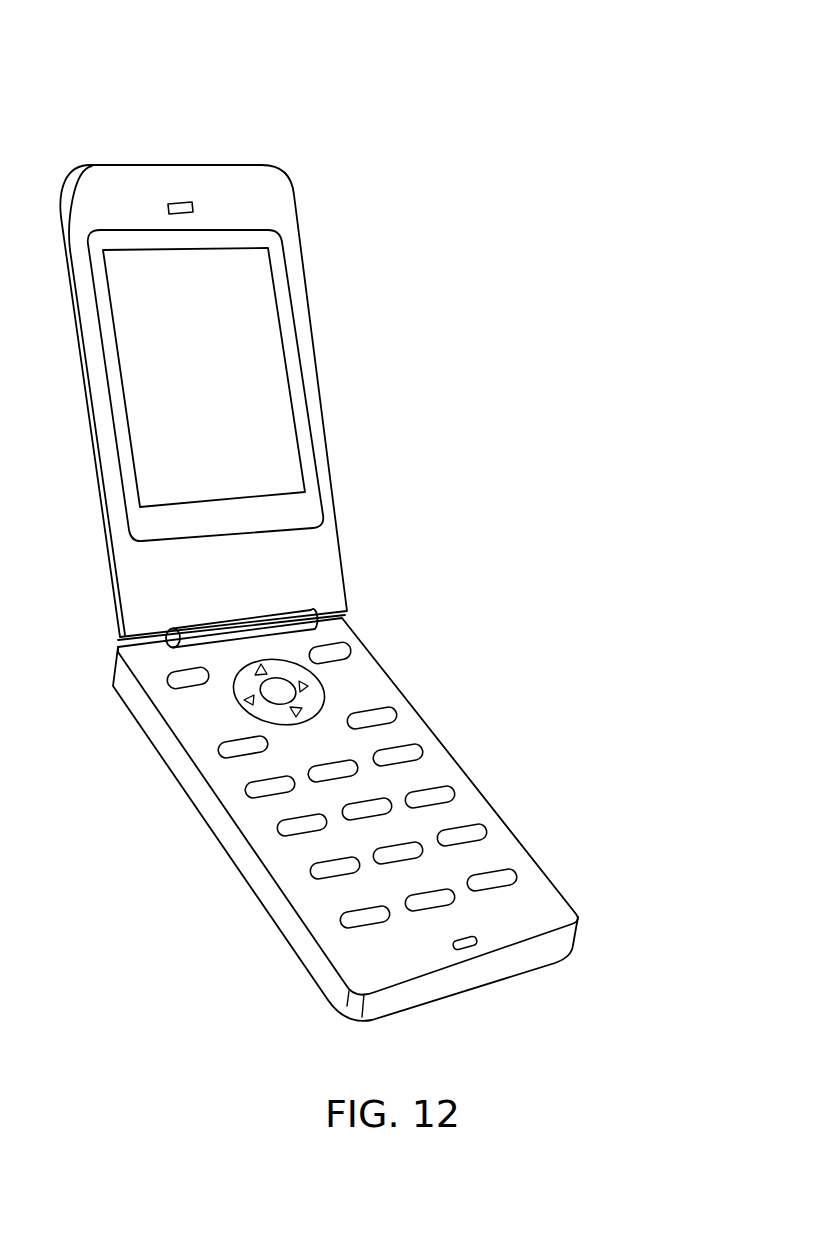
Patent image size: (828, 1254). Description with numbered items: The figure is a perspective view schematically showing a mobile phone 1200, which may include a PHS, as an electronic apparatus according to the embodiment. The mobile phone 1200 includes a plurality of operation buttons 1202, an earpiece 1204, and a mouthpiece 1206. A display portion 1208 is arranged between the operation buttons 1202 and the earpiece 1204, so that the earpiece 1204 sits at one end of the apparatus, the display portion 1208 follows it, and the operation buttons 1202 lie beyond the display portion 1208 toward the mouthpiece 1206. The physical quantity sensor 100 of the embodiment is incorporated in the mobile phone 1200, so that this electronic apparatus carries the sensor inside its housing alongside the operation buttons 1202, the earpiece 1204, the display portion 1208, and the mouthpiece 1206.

The mobile phone 1200 is at (388, 517).
The earpiece 1204 is at (183, 203).
The display portion 1208 is at (260, 363).
The physical quantity sensor 100 is at (414, 819).
The operation buttons 1202 is at (408, 752).
The mouthpiece 1206 is at (470, 935).